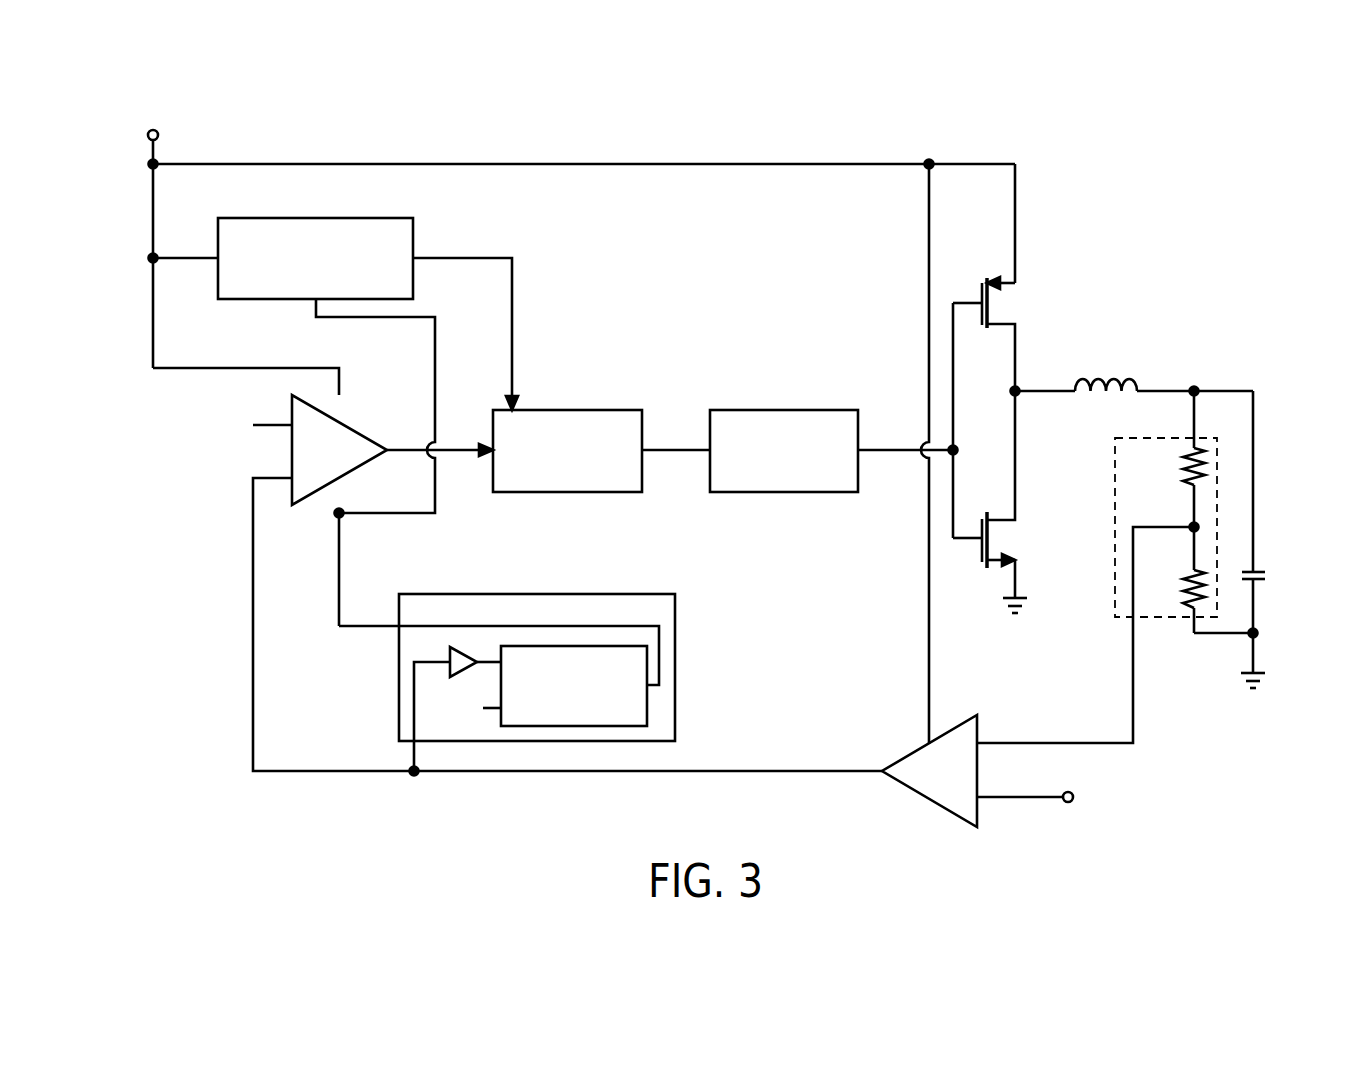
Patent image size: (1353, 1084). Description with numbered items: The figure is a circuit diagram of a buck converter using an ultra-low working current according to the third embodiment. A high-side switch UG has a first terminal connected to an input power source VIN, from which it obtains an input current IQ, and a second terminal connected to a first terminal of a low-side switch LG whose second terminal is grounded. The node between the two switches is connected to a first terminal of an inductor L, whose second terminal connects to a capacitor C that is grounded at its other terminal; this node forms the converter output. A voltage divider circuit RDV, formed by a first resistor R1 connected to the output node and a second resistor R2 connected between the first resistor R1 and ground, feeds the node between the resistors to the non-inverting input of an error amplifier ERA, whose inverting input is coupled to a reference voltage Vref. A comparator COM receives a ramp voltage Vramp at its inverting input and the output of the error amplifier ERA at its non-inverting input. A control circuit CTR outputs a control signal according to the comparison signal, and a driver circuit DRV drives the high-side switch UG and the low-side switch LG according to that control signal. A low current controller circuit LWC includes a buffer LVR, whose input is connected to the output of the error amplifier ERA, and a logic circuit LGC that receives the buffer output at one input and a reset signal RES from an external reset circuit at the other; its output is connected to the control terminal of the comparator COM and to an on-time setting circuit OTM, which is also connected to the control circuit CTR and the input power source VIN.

The input power source VIN is at (150, 130).
The input current IQ is at (564, 258).
The on-time setting circuit OTM is at (413, 239).
The comparator COM is at (362, 430).
The ramp voltage Vramp is at (231, 425).
The control circuit CTR is at (568, 410).
The driver circuit DRV is at (782, 410).
The high-side switch UG is at (1007, 277).
The low-side switch LG is at (1005, 502).
The inductor L is at (1134, 370).
The first resistor R1 is at (1175, 459).
The second resistor R2 is at (1175, 580).
The voltage divider circuit RDV is at (1117, 525).
The capacitor C is at (1265, 539).
The low current controller circuit LWC is at (534, 644).
The buffer LVR is at (450, 653).
The reset signal RES is at (463, 710).
The logic circuit LGC is at (647, 704).
The error amplifier ERA is at (929, 800).
The reference voltage Vref is at (1055, 798).